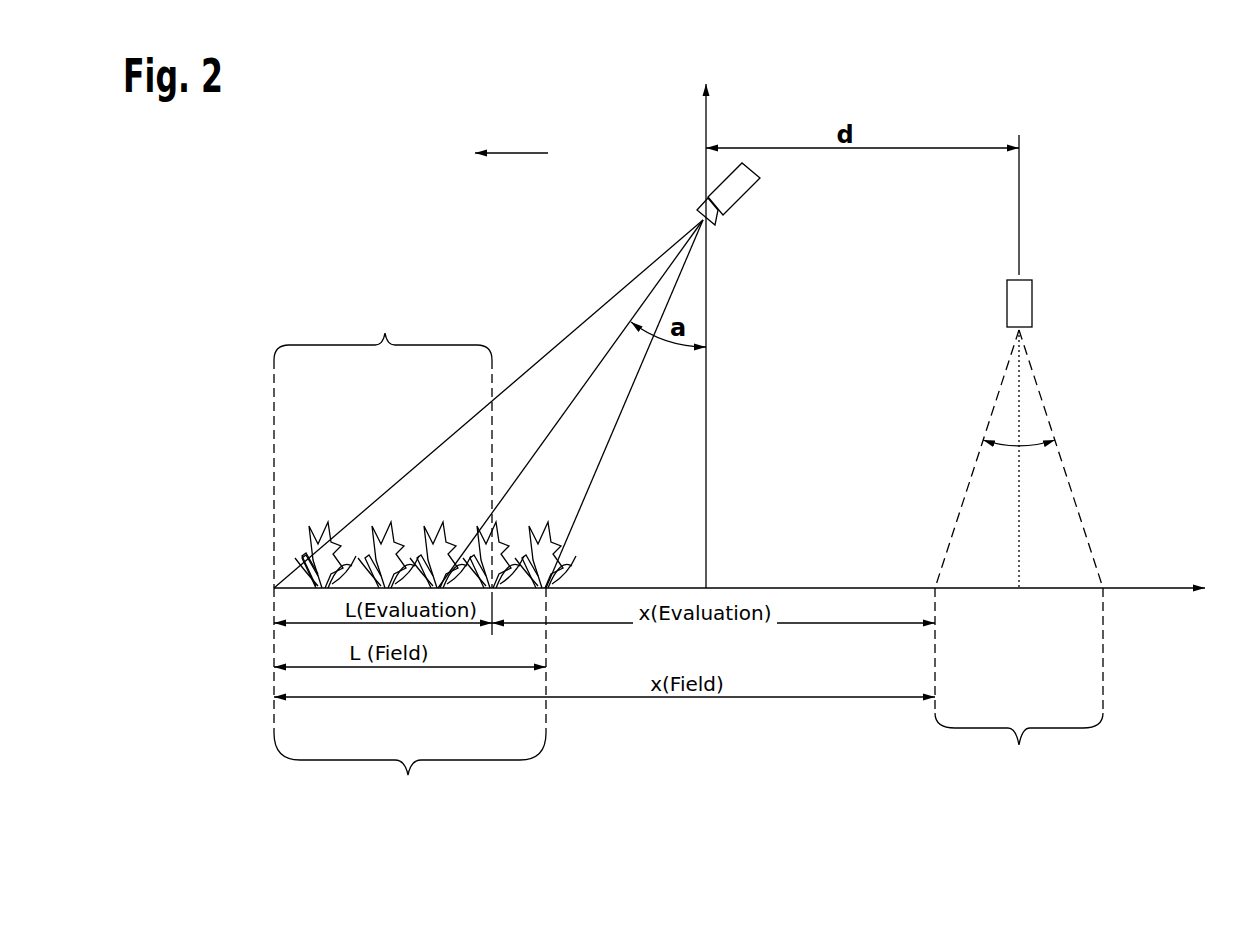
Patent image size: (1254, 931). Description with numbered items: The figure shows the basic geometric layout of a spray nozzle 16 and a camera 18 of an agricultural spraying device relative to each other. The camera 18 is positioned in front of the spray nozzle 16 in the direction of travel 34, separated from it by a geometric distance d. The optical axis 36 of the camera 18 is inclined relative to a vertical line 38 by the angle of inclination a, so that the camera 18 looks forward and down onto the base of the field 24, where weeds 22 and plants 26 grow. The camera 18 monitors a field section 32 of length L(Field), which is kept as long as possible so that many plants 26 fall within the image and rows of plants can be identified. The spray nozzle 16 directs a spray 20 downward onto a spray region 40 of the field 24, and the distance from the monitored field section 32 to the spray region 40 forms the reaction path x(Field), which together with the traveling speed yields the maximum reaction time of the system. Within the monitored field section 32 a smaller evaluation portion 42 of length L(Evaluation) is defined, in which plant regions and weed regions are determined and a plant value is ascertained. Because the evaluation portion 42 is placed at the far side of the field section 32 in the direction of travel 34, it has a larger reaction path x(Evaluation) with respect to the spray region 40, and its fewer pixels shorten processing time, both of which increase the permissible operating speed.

The spray nozzle 16 is at (1023, 303).
The camera 18 is at (735, 190).
The spray 20 is at (1063, 465).
The weed 22 is at (357, 550).
The field 24 is at (1157, 588).
The plant 26 is at (325, 545).
The monitored field section 32 is at (410, 701).
The direction of travel 34 is at (518, 153).
The optical axis 36 is at (585, 380).
The vertical line 38 is at (704, 122).
The spray region 40 is at (1019, 684).
The evaluation portion 42 is at (383, 443).